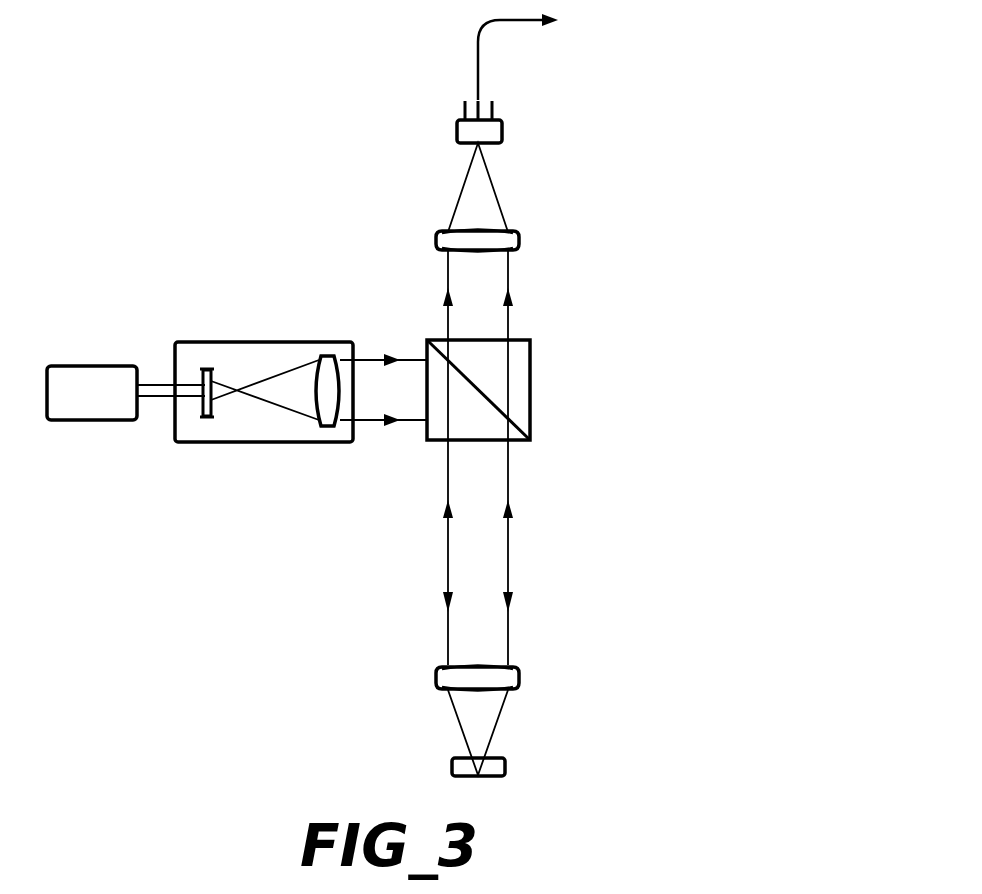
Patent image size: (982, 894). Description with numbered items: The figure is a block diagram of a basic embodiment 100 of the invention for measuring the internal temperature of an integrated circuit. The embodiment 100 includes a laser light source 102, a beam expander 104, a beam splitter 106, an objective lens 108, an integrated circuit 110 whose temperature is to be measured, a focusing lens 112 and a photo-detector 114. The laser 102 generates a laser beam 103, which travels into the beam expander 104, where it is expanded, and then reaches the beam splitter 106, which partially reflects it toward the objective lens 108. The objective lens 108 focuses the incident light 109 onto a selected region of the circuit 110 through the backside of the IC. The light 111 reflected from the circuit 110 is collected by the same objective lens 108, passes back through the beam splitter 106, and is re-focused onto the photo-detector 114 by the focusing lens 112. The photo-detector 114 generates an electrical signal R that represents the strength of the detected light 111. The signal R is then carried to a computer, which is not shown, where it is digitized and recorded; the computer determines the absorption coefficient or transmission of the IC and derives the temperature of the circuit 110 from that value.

The basic embodiment 100 is at (253, 654).
The laser light source 102 is at (102, 421).
The laser beam 103 is at (159, 383).
The beam expander 104 is at (273, 443).
The beam splitter 106 is at (533, 357).
The objective lens 108 is at (520, 682).
The incident light 109 is at (512, 598).
The integrated circuit 110 is at (452, 766).
The reflected light 111 is at (497, 191).
The focusing lens 112 is at (437, 243).
The photo-detector 114 is at (456, 130).
The electrical signal R is at (478, 57).